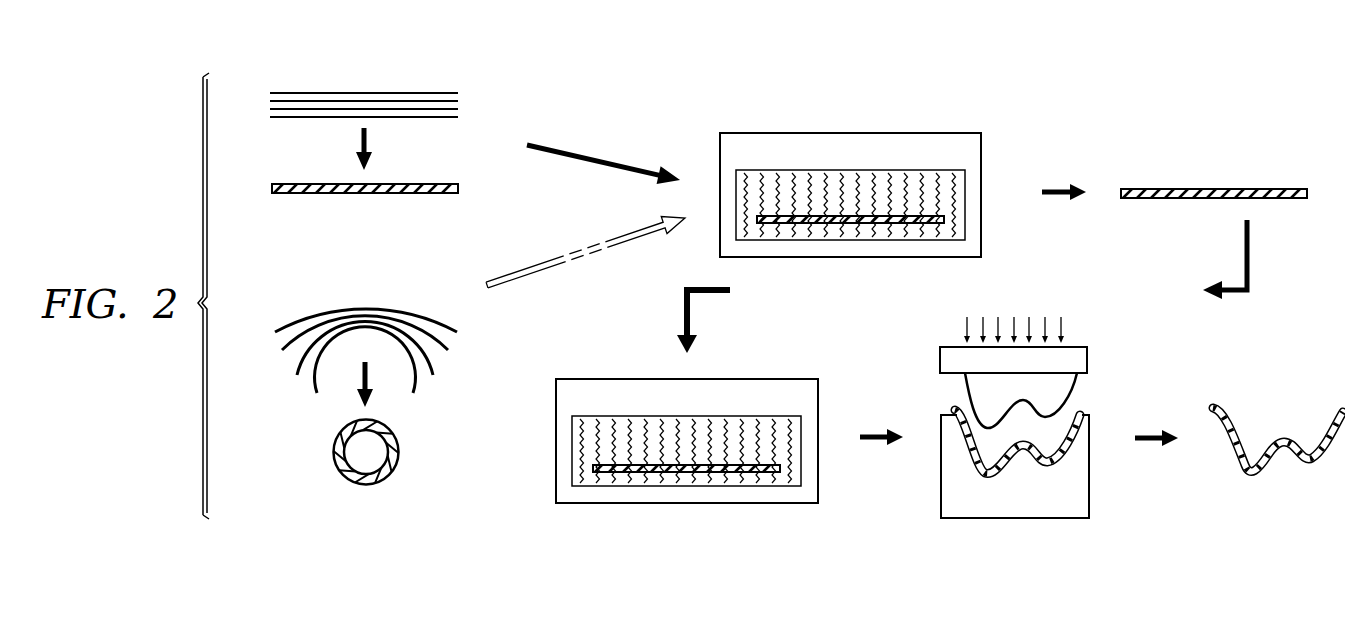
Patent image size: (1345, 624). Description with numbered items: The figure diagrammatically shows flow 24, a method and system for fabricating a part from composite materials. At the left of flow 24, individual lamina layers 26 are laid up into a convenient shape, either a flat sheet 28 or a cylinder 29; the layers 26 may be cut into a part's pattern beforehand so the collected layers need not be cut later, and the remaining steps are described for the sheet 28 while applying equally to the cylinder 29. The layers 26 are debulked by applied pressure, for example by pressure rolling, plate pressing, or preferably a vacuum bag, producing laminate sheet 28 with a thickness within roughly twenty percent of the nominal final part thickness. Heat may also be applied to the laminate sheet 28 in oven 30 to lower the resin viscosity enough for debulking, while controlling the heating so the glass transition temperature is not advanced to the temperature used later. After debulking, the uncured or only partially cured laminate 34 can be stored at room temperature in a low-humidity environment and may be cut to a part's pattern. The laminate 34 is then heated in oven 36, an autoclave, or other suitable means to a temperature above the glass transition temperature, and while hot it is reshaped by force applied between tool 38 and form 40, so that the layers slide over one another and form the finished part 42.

The flow 24 is at (1134, 84).
The lamina layers 26 is at (324, 83).
The laminate sheet 28 is at (280, 195).
The cylinder 29 is at (373, 487).
The oven 30 is at (983, 153).
The laminate 34 is at (1262, 189).
The oven 36 is at (590, 379).
The tool 38 is at (1090, 360).
The form 40 is at (1006, 503).
The part 42 is at (1286, 440).